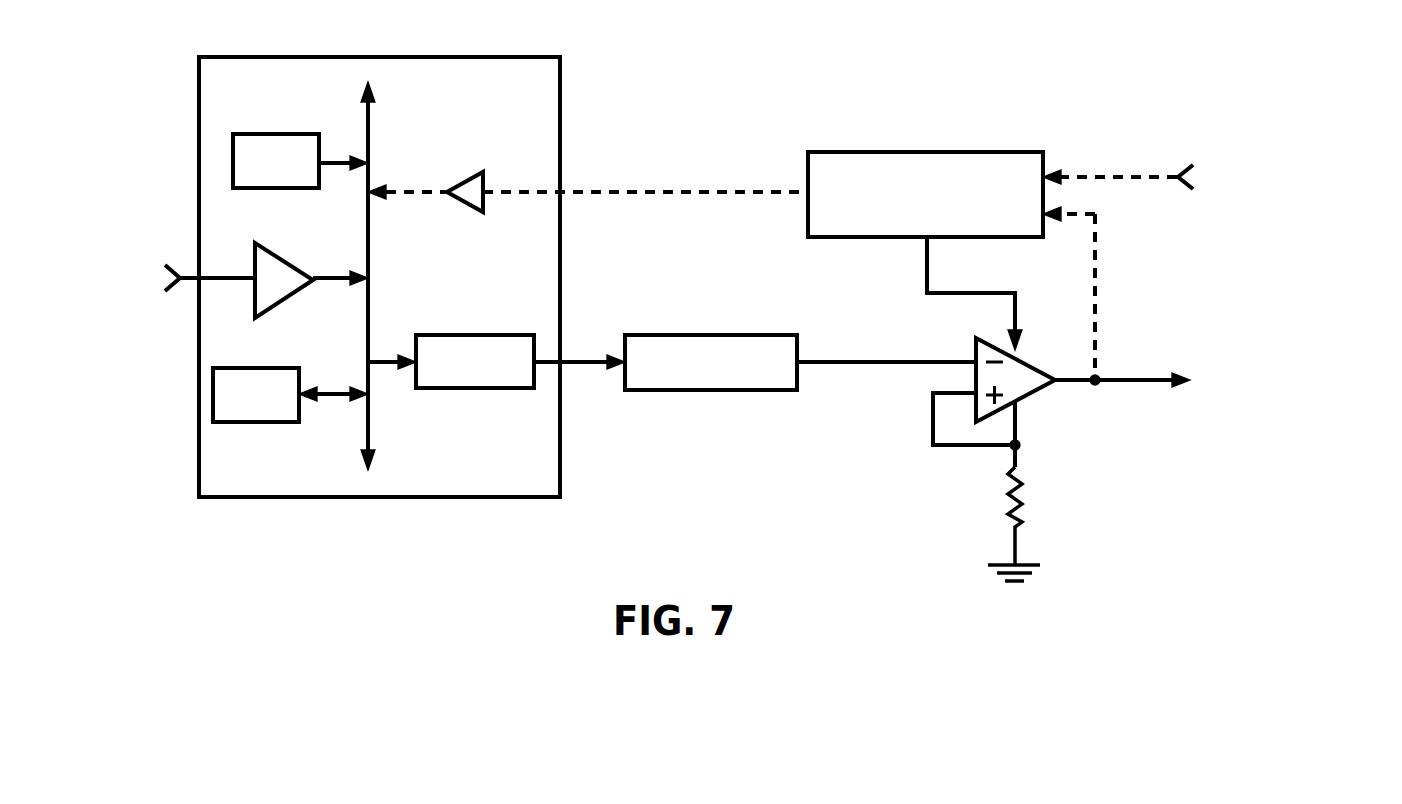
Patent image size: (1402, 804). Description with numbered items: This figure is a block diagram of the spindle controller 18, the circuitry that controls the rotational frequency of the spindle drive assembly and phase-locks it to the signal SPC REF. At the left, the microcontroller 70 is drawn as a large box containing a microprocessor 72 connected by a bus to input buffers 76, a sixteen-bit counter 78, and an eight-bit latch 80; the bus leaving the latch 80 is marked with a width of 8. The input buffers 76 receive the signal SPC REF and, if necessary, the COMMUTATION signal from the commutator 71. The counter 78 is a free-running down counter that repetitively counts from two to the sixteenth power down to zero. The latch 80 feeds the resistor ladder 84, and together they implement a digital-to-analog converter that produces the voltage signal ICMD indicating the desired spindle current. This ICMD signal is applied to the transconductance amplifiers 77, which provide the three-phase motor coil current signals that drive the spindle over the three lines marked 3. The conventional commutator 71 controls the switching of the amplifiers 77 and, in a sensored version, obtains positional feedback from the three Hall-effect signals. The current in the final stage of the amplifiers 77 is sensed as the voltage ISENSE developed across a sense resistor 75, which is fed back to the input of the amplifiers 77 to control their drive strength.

The spindle controller 18 is at (853, 37).
The microcontroller 70 is at (472, 57).
The 16-bit counter 78 is at (268, 134).
The input buffers 76 is at (268, 252).
The microprocessor 72 is at (238, 422).
The 8-bit latch 80 is at (495, 388).
The 8-bit bus 8 is at (575, 372).
The resistor ladder 84 is at (727, 390).
The commutator 71 is at (902, 152).
The transconductance amplifiers 77 is at (1033, 392).
The 3-phase motor coil lines 3 is at (1132, 393).
The sense resistor 75 is at (1007, 500).